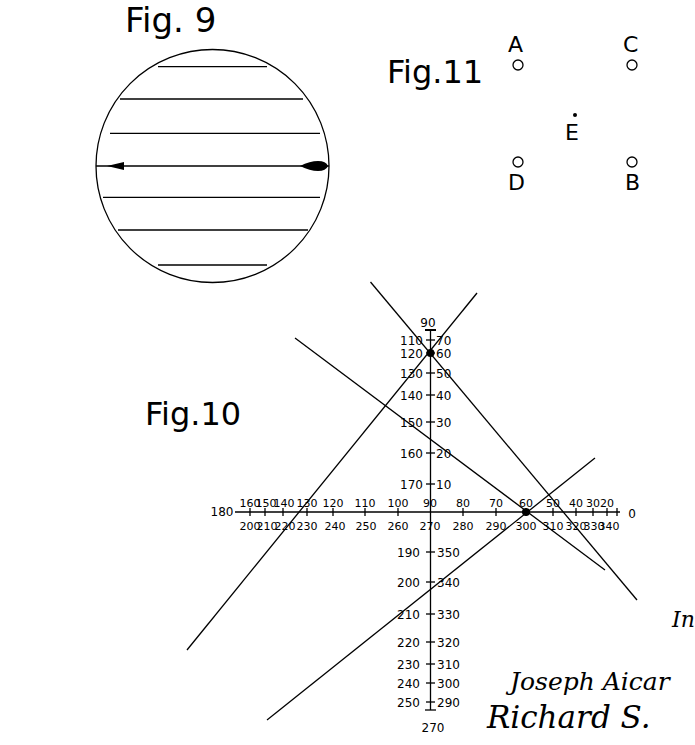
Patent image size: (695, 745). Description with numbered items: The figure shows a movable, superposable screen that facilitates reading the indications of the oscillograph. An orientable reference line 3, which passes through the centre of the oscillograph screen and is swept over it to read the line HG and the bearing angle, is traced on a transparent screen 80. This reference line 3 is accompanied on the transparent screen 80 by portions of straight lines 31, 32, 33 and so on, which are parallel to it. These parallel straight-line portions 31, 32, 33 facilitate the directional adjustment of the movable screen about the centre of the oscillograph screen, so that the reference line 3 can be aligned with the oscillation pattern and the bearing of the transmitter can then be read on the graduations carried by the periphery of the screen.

The transparent screen 80 is at (118, 134).
The orientable reference line 3 is at (128, 166).
The portion of straight line 31 is at (128, 198).
The portion of straight line 32 is at (140, 230).
The portion of straight line 33 is at (180, 266).